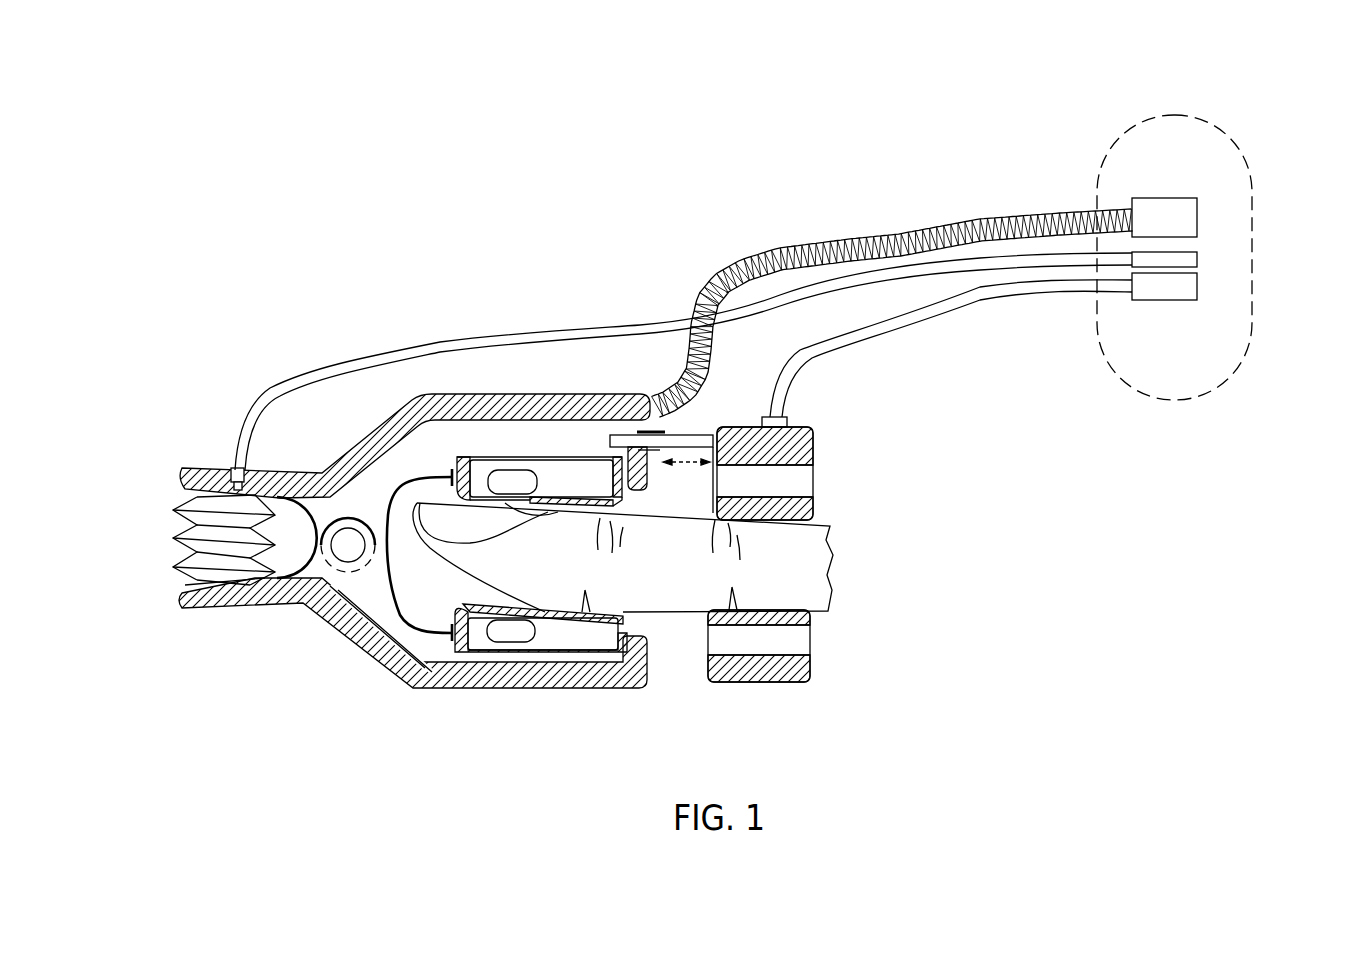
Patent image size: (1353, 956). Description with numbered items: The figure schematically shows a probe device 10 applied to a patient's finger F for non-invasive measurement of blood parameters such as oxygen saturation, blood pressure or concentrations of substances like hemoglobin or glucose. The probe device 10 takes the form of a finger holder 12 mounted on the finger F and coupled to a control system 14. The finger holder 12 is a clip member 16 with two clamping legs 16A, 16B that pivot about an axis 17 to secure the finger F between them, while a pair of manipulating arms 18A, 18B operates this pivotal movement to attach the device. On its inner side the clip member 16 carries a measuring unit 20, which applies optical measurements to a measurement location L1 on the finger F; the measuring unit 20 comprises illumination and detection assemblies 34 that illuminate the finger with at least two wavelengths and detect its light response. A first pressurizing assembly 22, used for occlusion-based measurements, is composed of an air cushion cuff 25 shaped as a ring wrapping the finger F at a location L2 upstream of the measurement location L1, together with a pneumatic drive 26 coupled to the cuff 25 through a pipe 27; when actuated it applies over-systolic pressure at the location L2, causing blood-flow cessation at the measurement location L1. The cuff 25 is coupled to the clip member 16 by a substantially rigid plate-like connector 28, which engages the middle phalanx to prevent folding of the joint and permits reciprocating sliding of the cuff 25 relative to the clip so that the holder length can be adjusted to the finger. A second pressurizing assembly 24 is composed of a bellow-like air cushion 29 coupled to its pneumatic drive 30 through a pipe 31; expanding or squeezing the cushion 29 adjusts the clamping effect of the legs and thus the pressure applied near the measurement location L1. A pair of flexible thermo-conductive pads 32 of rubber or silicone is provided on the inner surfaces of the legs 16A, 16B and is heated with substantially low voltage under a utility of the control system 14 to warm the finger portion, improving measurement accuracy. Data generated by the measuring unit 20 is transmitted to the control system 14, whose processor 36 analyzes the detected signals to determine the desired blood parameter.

The probe device 10 is at (288, 200).
The finger holder 12 is at (350, 420).
The control system 14 is at (1262, 165).
The clip member 16 is at (347, 638).
The clamping leg 16A is at (537, 688).
The clamping leg 16B is at (470, 394).
The axis 17 is at (348, 545).
The manipulating arm 18A is at (222, 607).
The manipulating arm 18B is at (196, 468).
The measuring unit 20 is at (478, 482).
The pressurizing assembly 22 is at (830, 486).
The pressurizing assembly 24 is at (140, 527).
The air cushion cuff 25 is at (780, 670).
The pneumatic drive 26 is at (1163, 301).
The pipe 27 is at (936, 320).
The rigid connector 28 is at (686, 430).
The bellow-like air cushion 29 is at (210, 565).
The pneumatic drive 30 is at (1198, 265).
The pipe 31 is at (1003, 272).
The thermo-conductive pads 32 is at (598, 525).
The illumination and detection assemblies 34 is at (512, 483).
The processor 36 is at (1163, 198).
The finger F is at (672, 580).
The measurement location L1 is at (545, 520).
The location L2 is at (828, 536).